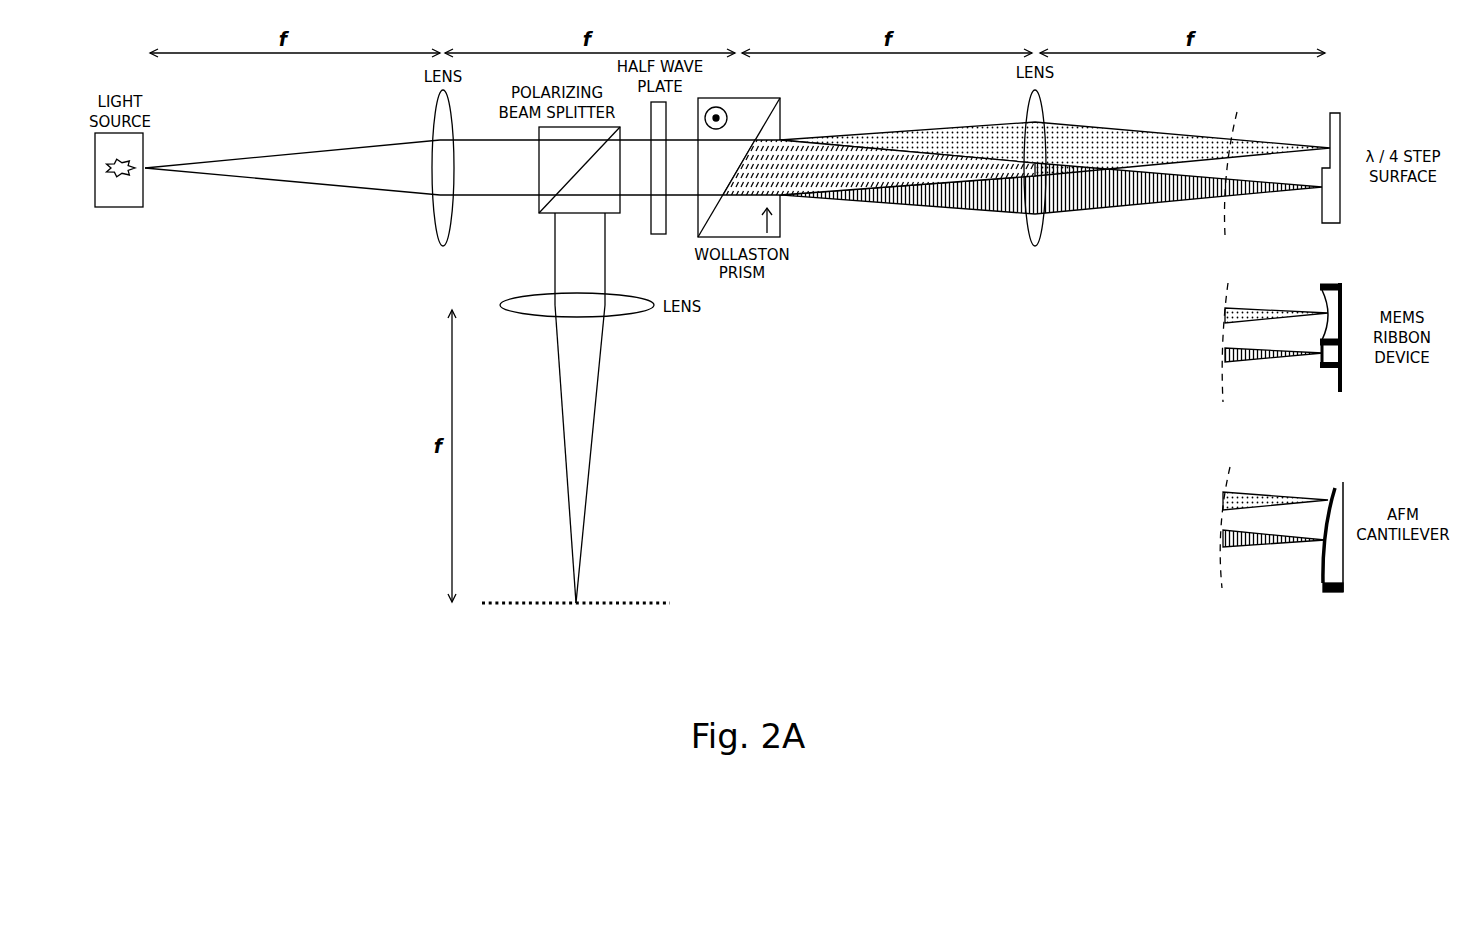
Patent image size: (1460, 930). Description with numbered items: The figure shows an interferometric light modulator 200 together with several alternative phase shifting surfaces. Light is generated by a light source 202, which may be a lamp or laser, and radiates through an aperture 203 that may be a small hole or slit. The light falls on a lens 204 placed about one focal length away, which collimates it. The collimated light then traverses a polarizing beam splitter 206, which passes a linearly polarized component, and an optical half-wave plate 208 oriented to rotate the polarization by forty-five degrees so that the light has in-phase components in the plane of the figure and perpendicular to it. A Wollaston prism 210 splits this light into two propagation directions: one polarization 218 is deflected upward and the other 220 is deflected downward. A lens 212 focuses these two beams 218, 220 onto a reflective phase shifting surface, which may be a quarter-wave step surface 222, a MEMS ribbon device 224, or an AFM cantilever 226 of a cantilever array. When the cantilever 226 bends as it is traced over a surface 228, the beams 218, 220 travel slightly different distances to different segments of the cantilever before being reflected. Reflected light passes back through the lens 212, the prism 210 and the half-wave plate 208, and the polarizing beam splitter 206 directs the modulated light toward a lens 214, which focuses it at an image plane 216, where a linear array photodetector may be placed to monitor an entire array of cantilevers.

The interferometer system 200 is at (227, 448).
The light source 202 is at (120, 210).
The aperture 203 is at (150, 172).
The lens 204 is at (430, 222).
The polarizing beam splitter 206 is at (533, 220).
The optical ½-wave plate 208 is at (647, 227).
The Wollaston prism 210 is at (792, 225).
The lens 212 is at (1020, 230).
The lens 214 is at (633, 323).
The image plane 216 is at (635, 595).
The polarization component beam 218 is at (1113, 122).
The polarization component beam 220 is at (1127, 212).
The ¼-wave step surface 222 is at (1347, 197).
The MEMS ribbon device 224 is at (1348, 378).
The AFM cantilever 226 is at (1312, 578).
The surface 228 is at (1350, 565).